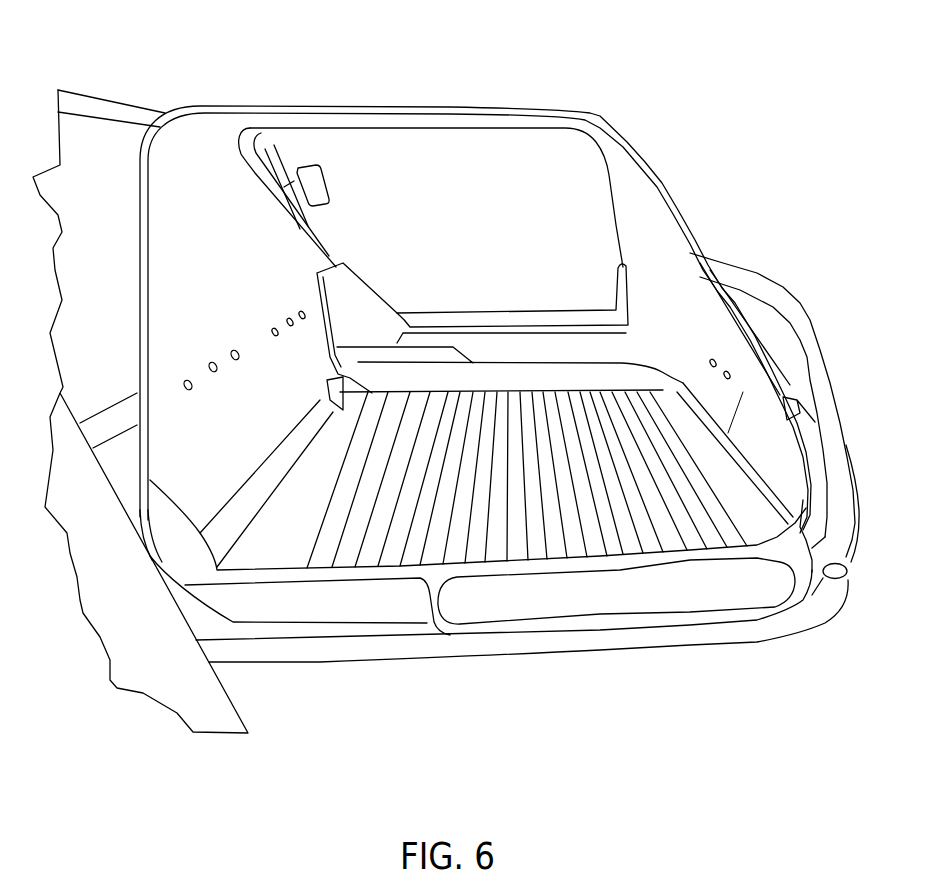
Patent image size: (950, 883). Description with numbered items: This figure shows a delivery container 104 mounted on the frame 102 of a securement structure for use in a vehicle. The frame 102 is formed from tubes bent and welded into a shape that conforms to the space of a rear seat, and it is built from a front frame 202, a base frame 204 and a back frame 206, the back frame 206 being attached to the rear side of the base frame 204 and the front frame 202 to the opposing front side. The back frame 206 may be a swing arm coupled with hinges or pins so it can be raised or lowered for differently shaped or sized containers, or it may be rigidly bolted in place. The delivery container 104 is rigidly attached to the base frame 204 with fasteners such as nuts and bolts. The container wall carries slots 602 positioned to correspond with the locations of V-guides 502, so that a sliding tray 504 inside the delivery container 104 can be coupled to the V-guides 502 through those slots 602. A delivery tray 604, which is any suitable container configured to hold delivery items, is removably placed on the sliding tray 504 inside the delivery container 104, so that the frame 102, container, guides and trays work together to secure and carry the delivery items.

The frame 102 is at (727, 257).
The delivery container 104 is at (668, 195).
The front frame 202 is at (828, 380).
The base frame 204 is at (448, 653).
The back frame 206 is at (97, 97).
The V-guides 502 is at (787, 507).
The sliding tray 504 is at (357, 392).
The slots 602 is at (743, 392).
The delivery tray 604 is at (490, 307).